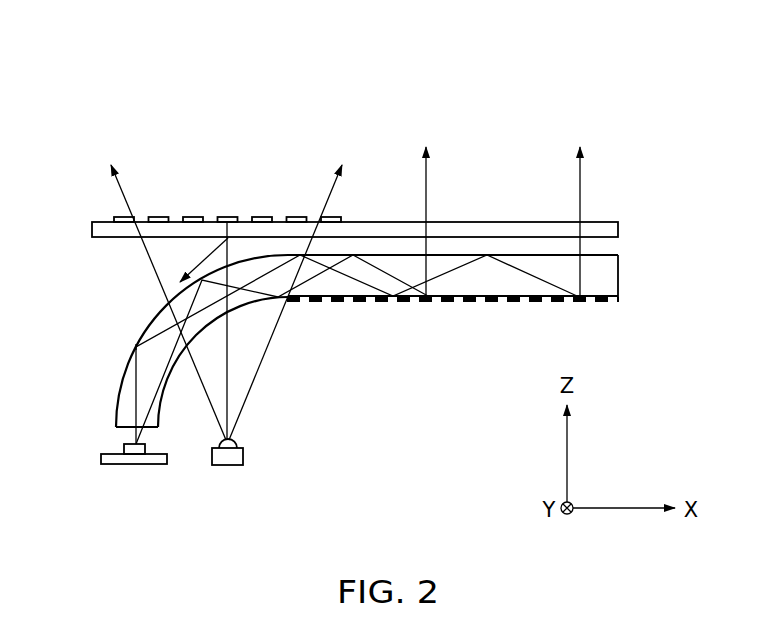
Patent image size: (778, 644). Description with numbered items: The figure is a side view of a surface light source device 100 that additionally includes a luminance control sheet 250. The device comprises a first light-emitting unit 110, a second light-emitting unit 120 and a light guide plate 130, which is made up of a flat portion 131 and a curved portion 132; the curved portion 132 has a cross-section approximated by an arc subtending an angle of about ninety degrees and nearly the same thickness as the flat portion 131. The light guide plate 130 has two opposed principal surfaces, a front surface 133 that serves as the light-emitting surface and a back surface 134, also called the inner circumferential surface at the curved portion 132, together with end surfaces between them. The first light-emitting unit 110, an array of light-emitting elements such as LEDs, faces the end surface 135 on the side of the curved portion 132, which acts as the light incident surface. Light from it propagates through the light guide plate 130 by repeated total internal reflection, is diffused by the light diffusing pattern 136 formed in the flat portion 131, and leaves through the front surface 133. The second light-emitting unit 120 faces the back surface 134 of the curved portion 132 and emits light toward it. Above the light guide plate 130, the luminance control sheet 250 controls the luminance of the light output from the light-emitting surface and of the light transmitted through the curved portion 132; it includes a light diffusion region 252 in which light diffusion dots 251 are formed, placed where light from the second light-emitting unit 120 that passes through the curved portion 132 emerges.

The surface light source device 100 is at (138, 122).
The first light-emitting unit 110 is at (133, 464).
The second light-emitting unit 120 is at (230, 466).
The light guide plate 130 is at (336, 331).
The flat portion 131 is at (450, 255).
The curved portion 132 is at (148, 348).
The front surface 133 is at (162, 314).
The back surface 134 is at (260, 303).
The end surface 135 is at (118, 436).
The light diffusing pattern 136 is at (447, 303).
The luminance control sheet 250 is at (352, 221).
The light diffusion dots 251 is at (122, 216).
The light diffusion region 252 is at (343, 193).